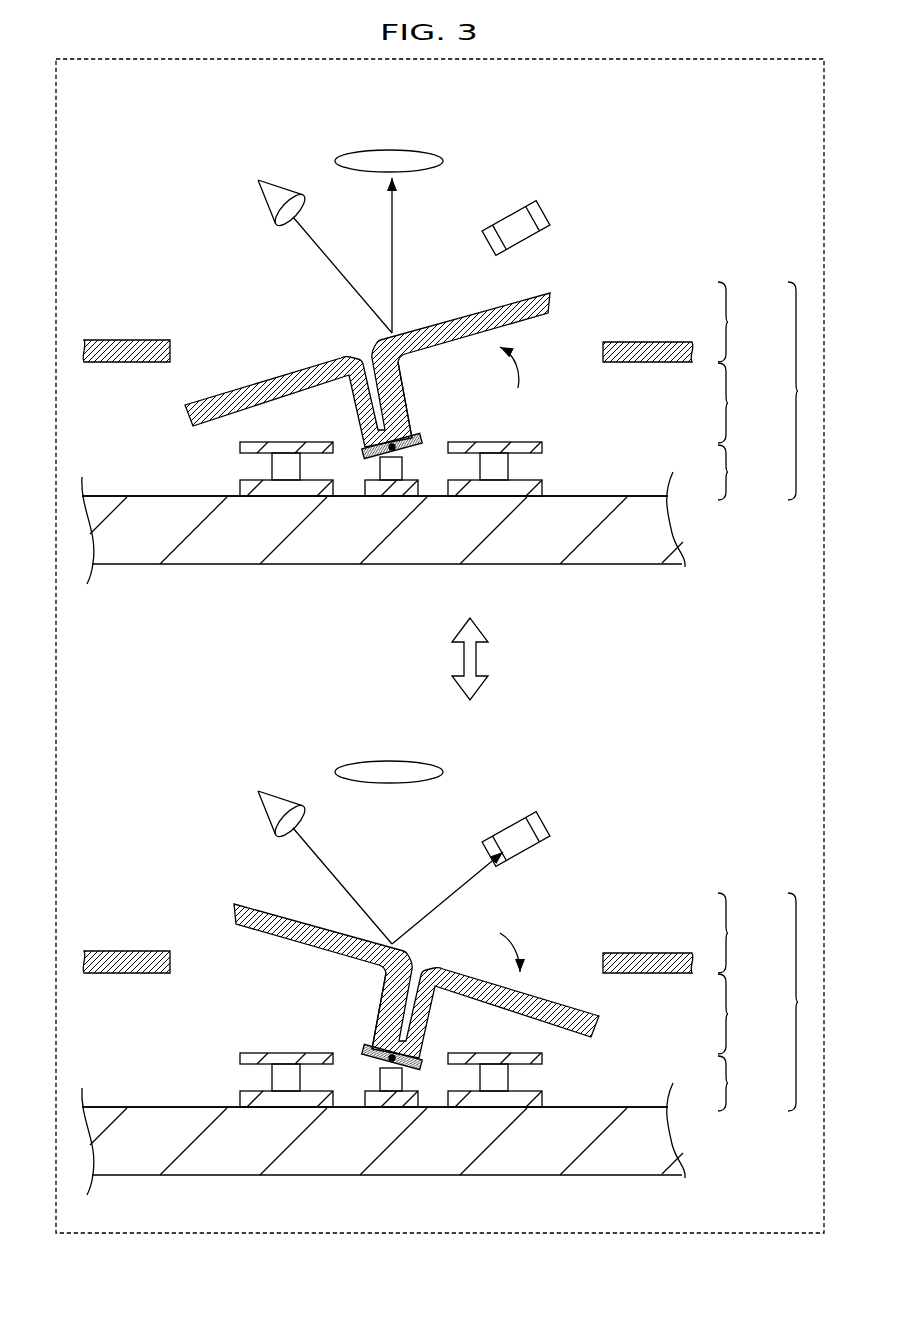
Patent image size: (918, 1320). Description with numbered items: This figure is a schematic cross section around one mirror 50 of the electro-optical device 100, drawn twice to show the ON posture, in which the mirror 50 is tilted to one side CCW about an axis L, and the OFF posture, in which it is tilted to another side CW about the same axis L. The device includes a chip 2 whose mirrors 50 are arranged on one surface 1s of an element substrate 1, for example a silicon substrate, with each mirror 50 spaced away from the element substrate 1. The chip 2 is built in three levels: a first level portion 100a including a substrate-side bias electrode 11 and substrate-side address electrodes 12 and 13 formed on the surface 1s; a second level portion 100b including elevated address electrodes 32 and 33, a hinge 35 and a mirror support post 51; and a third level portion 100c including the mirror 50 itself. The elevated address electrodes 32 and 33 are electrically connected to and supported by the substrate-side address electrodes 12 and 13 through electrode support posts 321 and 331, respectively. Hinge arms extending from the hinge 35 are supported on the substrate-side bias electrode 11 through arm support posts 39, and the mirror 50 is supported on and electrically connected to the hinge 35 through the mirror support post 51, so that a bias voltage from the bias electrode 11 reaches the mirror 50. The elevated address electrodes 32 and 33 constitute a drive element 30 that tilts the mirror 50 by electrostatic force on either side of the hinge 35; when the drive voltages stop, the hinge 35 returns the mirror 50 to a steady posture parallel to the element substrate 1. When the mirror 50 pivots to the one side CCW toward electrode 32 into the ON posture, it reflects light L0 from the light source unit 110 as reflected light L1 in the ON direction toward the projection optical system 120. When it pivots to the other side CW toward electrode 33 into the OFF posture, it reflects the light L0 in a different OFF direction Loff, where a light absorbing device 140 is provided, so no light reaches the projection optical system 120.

The electro-optical device 100 is at (653, 145).
The light source unit 110 is at (262, 177).
The projection optical system 120 is at (437, 148).
The light absorbing device 140 is at (533, 213).
The mirror 50 is at (391, 670).
The mirror support post 51 is at (404, 398).
The hinge 35 is at (379, 472).
The arm support post 39 is at (362, 452).
The drive element 30 is at (392, 741).
The elevated address electrode 32 is at (240, 447).
The elevated address electrode 33 is at (542, 446).
The electrode support post 321 is at (272, 470).
The electrode support post 331 is at (509, 464).
The element substrate 1 is at (412, 816).
The one surface of the element substrate 1s is at (640, 497).
The substrate-side bias electrode 11 is at (390, 494).
The substrate-side address electrode 12 is at (285, 490).
The substrate-side address electrode 13 is at (497, 490).
The chip 2 is at (765, 696).
The first level portion 100a is at (746, 778).
The second level portion 100b is at (746, 708).
The third level portion 100c is at (746, 627).
The axis L is at (405, 452).
The light L0 is at (342, 580).
The reflected light L1 is at (427, 255).
The OFF direction Loff is at (447, 898).
The one side CCW is at (534, 367).
The another side CW is at (528, 951).